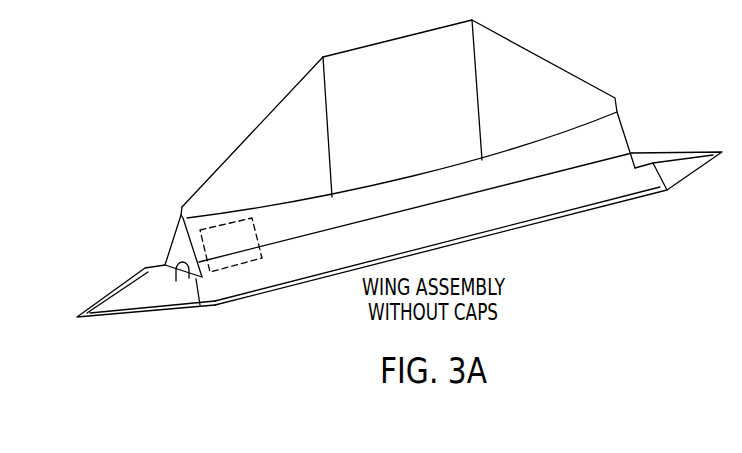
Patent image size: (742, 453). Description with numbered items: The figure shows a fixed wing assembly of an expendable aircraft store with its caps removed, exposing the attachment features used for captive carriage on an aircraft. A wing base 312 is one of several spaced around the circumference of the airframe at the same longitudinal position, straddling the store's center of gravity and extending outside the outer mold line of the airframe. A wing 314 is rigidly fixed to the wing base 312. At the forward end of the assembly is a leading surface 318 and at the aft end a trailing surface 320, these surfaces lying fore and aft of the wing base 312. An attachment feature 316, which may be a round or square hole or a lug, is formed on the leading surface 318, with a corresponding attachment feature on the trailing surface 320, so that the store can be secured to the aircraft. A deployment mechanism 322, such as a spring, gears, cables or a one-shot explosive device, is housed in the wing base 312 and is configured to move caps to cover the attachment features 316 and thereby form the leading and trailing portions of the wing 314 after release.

The wing base 312 is at (530, 200).
The wing 314 is at (253, 131).
The attachment feature 316 is at (185, 273).
The leading surface 318 is at (168, 242).
The trailing surface 320 is at (637, 127).
The deployment mechanism 322 is at (233, 242).